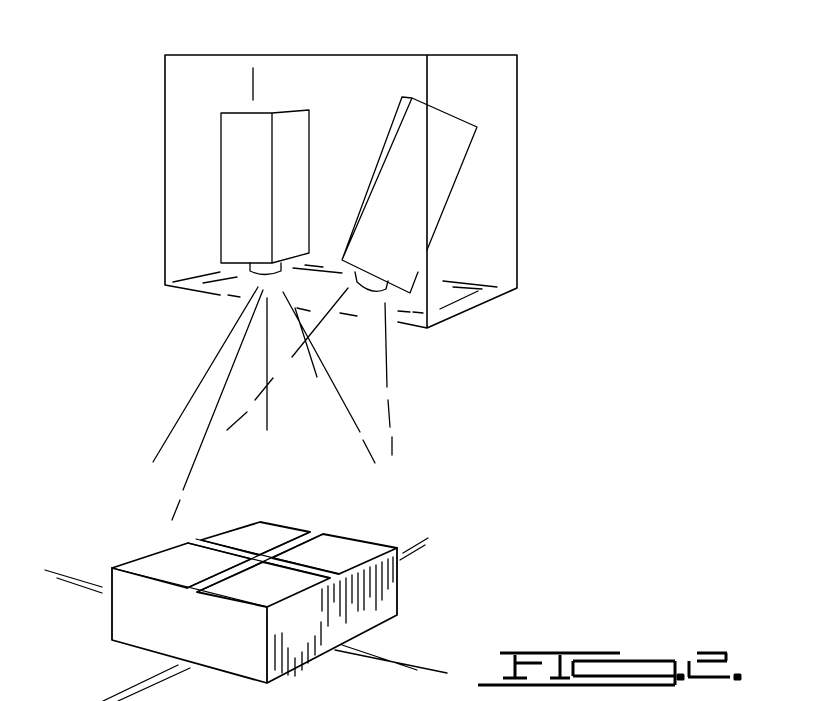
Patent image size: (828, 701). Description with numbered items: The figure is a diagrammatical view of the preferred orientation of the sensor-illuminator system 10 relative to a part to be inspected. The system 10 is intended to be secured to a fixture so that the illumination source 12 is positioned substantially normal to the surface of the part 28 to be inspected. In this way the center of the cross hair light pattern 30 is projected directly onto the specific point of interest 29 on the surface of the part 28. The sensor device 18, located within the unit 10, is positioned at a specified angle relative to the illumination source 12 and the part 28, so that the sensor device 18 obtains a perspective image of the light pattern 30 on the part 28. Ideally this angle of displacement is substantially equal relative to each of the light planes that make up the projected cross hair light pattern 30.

The sensor-illuminator system 10 is at (522, 101).
The illumination source 12 is at (288, 122).
The sensor device 18 is at (450, 178).
The part 28 is at (294, 576).
The specific point of interest 29 is at (250, 559).
The cross hair light pattern 30 is at (300, 537).